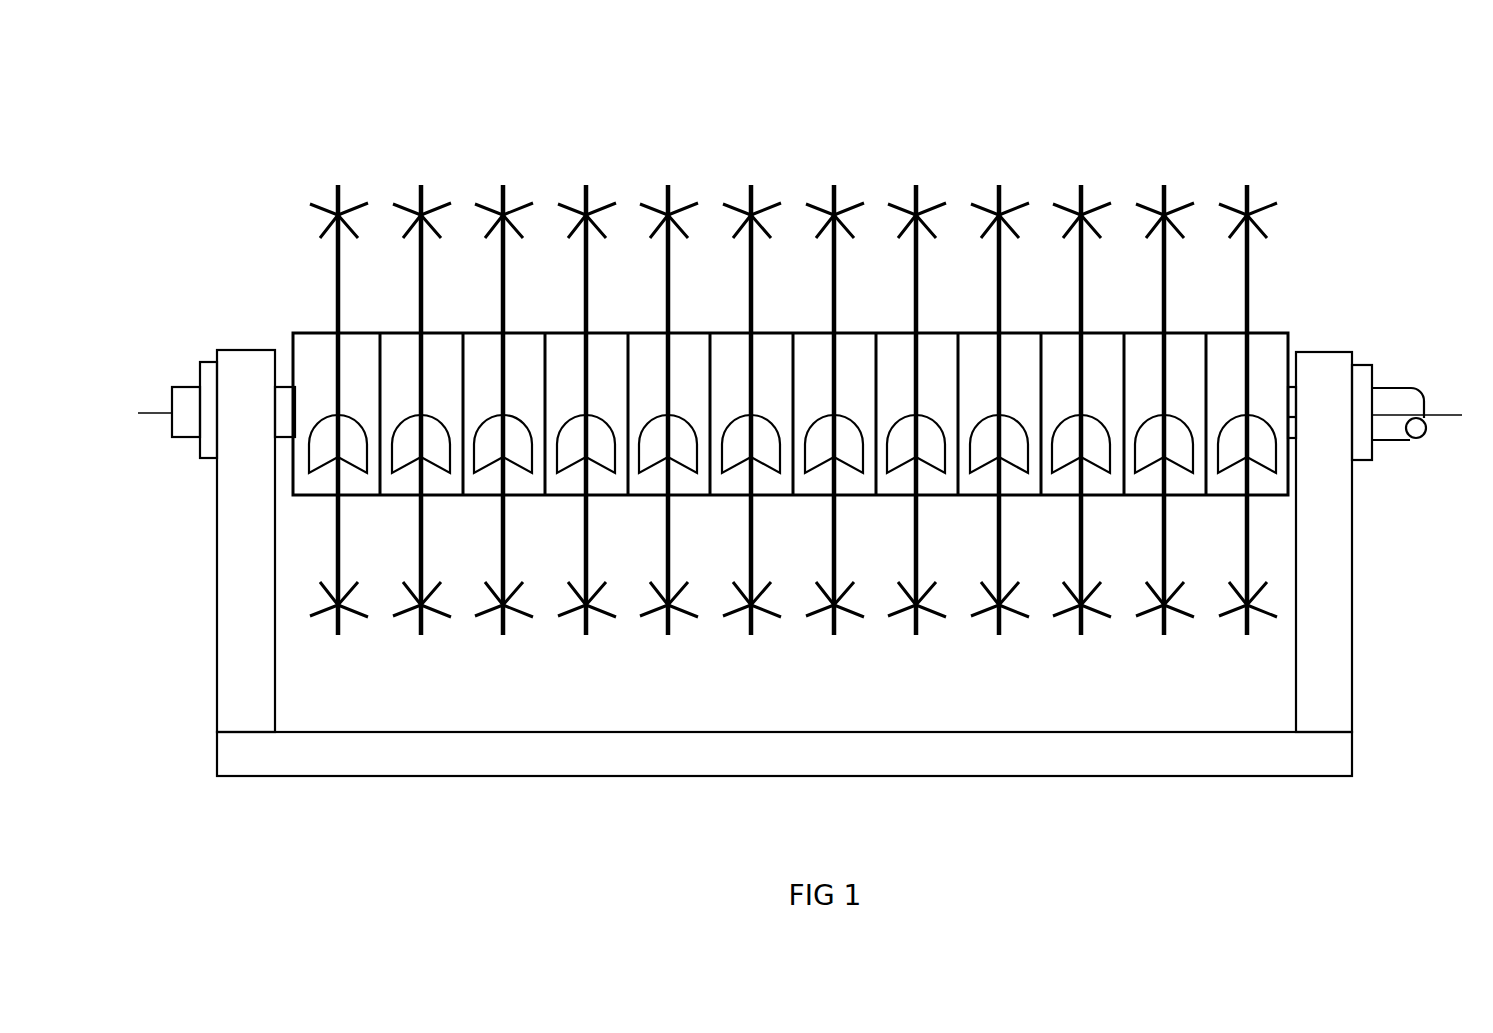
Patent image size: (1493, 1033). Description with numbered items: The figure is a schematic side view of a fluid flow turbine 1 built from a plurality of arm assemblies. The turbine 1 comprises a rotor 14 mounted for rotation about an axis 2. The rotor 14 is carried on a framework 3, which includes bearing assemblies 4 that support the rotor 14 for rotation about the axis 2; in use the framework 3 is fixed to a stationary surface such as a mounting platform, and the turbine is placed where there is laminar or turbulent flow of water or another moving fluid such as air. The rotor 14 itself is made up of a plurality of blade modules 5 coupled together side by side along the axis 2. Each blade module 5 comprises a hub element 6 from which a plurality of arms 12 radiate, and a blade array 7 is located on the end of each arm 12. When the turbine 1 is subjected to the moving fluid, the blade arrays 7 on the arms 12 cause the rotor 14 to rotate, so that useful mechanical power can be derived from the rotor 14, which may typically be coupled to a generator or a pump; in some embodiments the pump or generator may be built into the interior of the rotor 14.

The fluid flow turbine 1 is at (935, 135).
The axis 2 is at (1435, 412).
The framework 3 is at (1318, 590).
The bearing assemblies 4 is at (1365, 372).
The blade modules 5 is at (345, 474).
The hub element 6 is at (360, 333).
The blade array 7 is at (1256, 205).
The arms 12 is at (668, 283).
The rotor 14 is at (1290, 330).